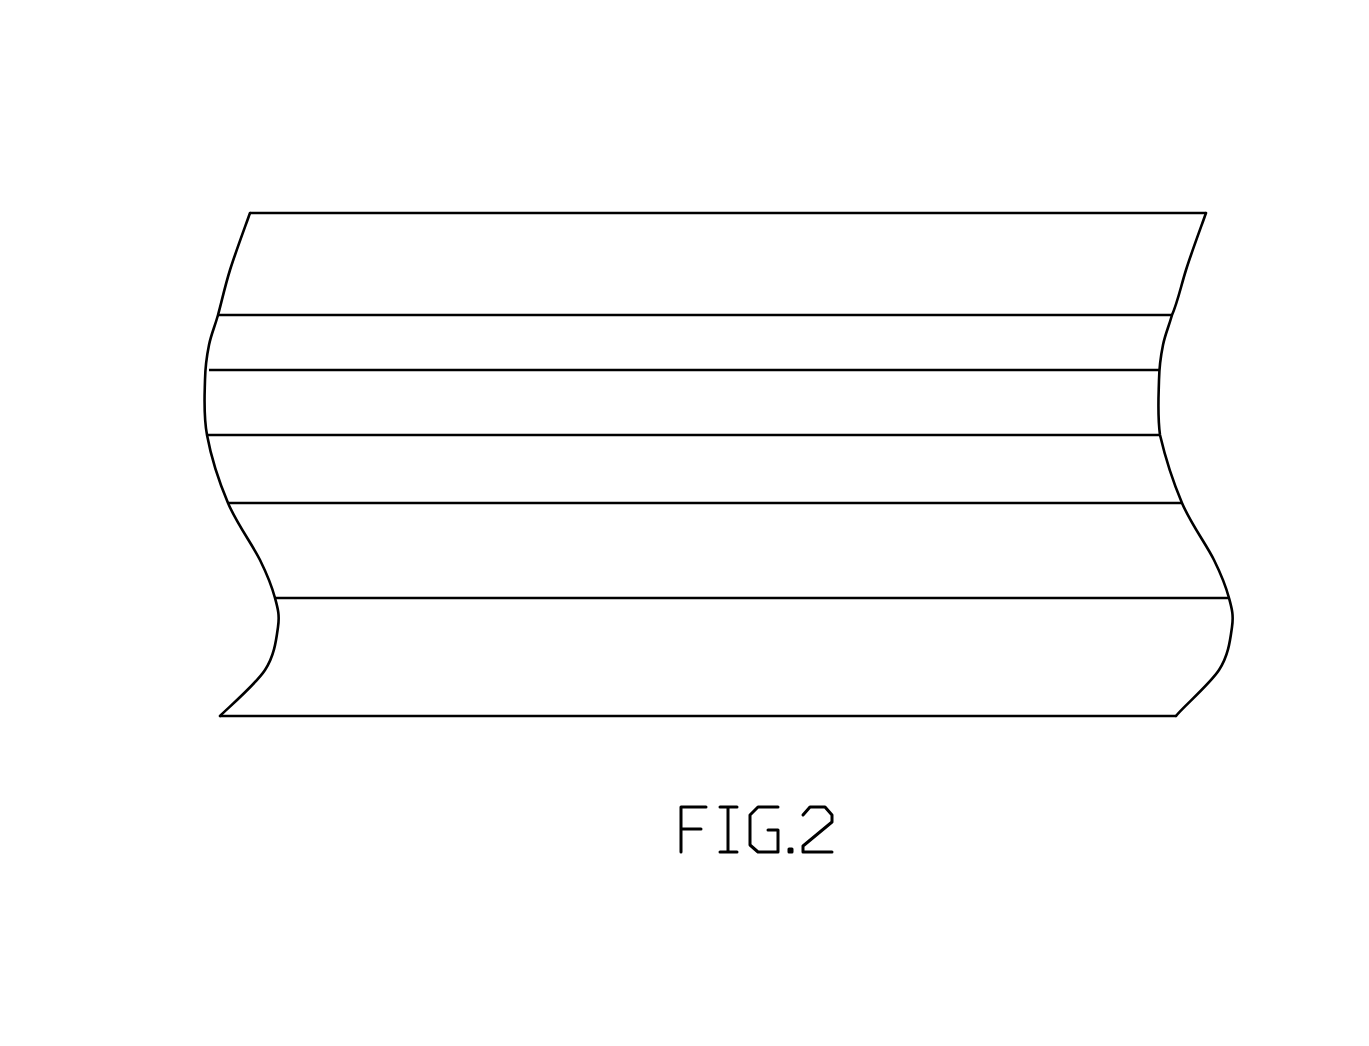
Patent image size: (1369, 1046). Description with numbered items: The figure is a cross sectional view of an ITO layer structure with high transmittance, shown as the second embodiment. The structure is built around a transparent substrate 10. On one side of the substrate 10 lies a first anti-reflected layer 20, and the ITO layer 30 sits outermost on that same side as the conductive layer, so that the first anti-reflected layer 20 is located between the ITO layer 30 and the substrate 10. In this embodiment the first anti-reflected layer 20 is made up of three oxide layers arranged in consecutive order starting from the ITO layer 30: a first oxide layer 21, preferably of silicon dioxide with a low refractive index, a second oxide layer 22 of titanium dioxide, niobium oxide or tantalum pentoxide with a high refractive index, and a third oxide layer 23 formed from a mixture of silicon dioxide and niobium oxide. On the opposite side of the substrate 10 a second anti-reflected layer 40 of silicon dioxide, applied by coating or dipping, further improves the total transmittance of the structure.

The transparent substrate 10 is at (1137, 547).
The first anti-reflected layer 20 is at (190, 316).
The first oxide layer 21 is at (1110, 328).
The second oxide layer 22 is at (1127, 383).
The third oxide layer 23 is at (1127, 457).
The ITO layer 30 is at (1030, 260).
The second anti-reflected layer 40 is at (1158, 665).